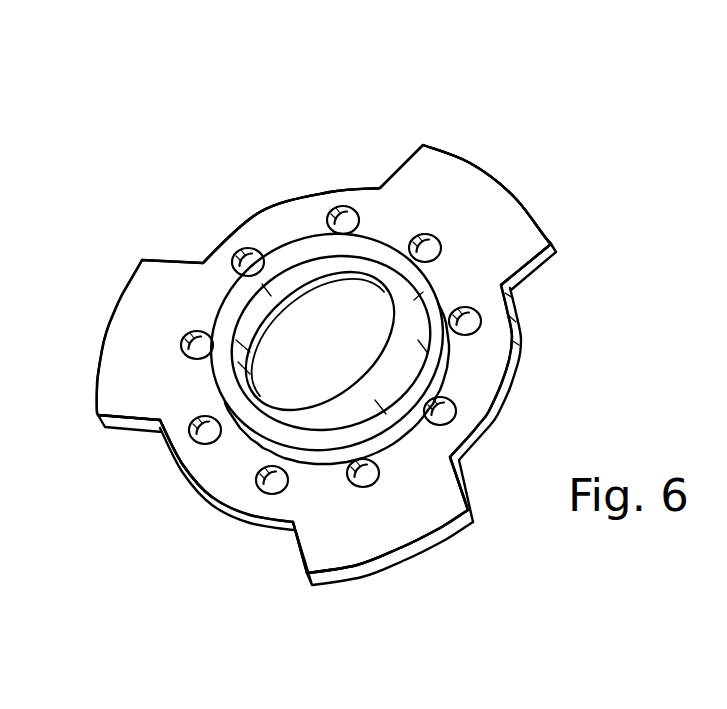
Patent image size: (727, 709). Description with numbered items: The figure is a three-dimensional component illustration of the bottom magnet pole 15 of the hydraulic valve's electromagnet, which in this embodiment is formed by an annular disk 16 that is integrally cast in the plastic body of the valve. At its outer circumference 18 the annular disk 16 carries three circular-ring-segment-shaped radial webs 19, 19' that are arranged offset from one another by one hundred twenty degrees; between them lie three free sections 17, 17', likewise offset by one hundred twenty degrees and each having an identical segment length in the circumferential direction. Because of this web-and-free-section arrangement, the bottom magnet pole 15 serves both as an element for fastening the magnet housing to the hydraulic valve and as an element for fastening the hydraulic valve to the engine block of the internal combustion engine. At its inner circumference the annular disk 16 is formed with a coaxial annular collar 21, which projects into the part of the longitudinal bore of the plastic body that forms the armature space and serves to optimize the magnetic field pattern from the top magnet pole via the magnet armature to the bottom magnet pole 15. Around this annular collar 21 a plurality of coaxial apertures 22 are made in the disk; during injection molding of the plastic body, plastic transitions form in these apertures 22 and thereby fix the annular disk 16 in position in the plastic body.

The bottom magnet pole 15 is at (368, 124).
The annular disk 16 is at (484, 359).
The free section 17 is at (544, 383).
The free section 17' is at (285, 500).
The outer circumference 18 is at (170, 453).
The radial web 19 is at (466, 183).
The radial web 19' is at (380, 558).
The annular collar 21 is at (287, 250).
The aperture 22 is at (456, 410).